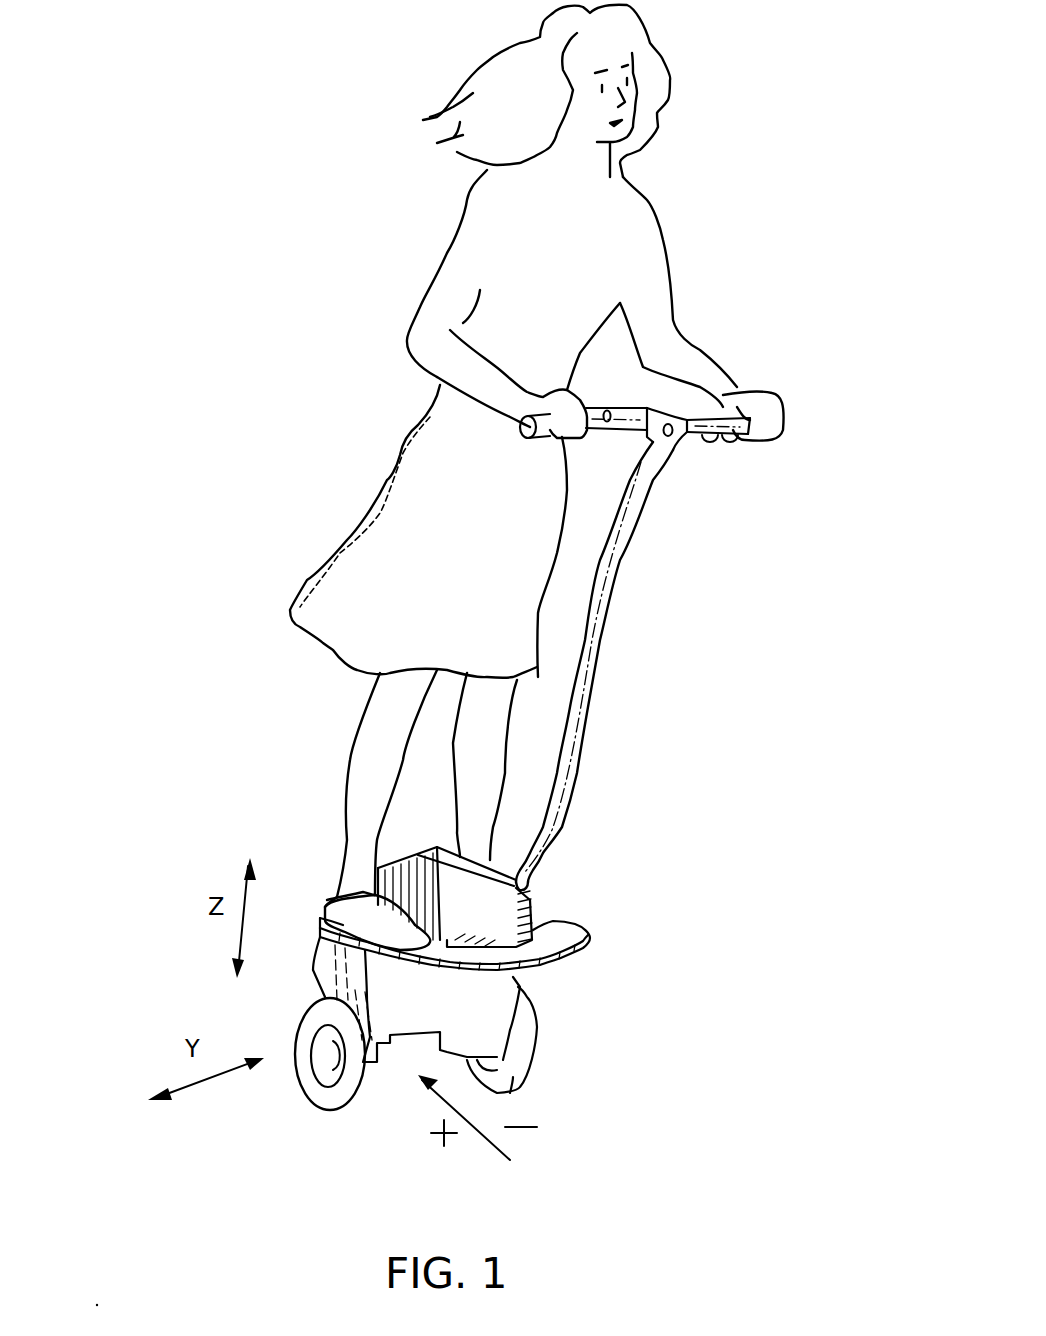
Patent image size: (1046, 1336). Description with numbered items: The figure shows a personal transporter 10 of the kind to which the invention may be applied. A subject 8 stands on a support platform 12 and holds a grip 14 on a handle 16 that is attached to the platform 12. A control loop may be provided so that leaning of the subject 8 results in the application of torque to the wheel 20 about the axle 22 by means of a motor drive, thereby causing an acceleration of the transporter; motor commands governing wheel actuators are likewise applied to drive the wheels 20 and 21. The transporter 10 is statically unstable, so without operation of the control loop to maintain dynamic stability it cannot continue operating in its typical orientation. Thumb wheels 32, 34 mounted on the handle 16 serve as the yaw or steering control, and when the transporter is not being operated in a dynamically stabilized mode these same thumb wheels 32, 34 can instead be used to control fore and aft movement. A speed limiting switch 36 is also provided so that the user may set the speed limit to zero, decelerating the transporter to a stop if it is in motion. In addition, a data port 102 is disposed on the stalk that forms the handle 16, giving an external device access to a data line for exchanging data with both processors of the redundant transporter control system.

The subject 8 is at (650, 222).
The personal transporter 10 is at (278, 465).
The support platform 12 is at (590, 945).
The grip 14 is at (680, 440).
The handle 16 is at (603, 628).
The wheel 20 is at (525, 1063).
The wheel 21 is at (325, 1108).
The axle 22 is at (330, 1055).
The thumb wheel 32 is at (745, 445).
The thumb wheel 34 is at (710, 445).
The speed limiting switch 36 is at (607, 425).
The data port 102 is at (668, 437).